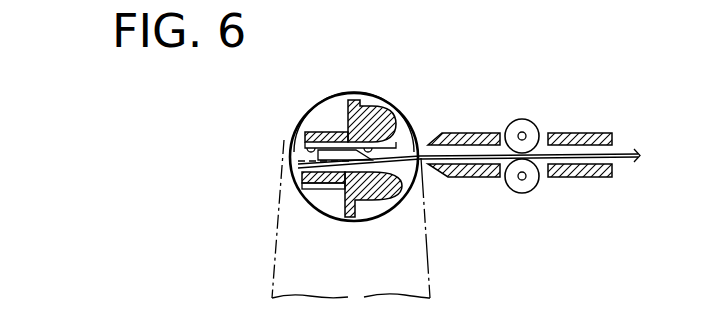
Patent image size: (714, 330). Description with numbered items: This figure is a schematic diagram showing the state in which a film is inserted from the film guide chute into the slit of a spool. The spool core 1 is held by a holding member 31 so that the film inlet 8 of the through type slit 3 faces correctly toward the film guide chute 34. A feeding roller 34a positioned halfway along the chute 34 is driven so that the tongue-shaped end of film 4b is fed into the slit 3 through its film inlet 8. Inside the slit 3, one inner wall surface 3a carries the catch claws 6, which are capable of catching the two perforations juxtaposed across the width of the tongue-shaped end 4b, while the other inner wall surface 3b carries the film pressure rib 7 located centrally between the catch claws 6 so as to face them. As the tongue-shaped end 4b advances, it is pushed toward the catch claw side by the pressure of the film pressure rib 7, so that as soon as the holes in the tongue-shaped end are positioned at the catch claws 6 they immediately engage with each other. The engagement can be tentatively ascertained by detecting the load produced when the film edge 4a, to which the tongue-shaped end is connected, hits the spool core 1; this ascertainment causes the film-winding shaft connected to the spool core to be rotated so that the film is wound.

The spool core 1 is at (304, 106).
The slit 3 is at (305, 139).
The inner wall surface 3a is at (323, 178).
The inner wall surface 3b is at (375, 128).
The film edge 4a is at (424, 142).
The tongue-shaped end 4b is at (302, 177).
The catch claw 6 is at (314, 156).
The film pressure rib 7 is at (333, 137).
The film inlet 8 is at (418, 172).
The holding member 31 is at (275, 230).
The film guide chute 34 is at (489, 178).
The feeding roller 34a is at (526, 193).